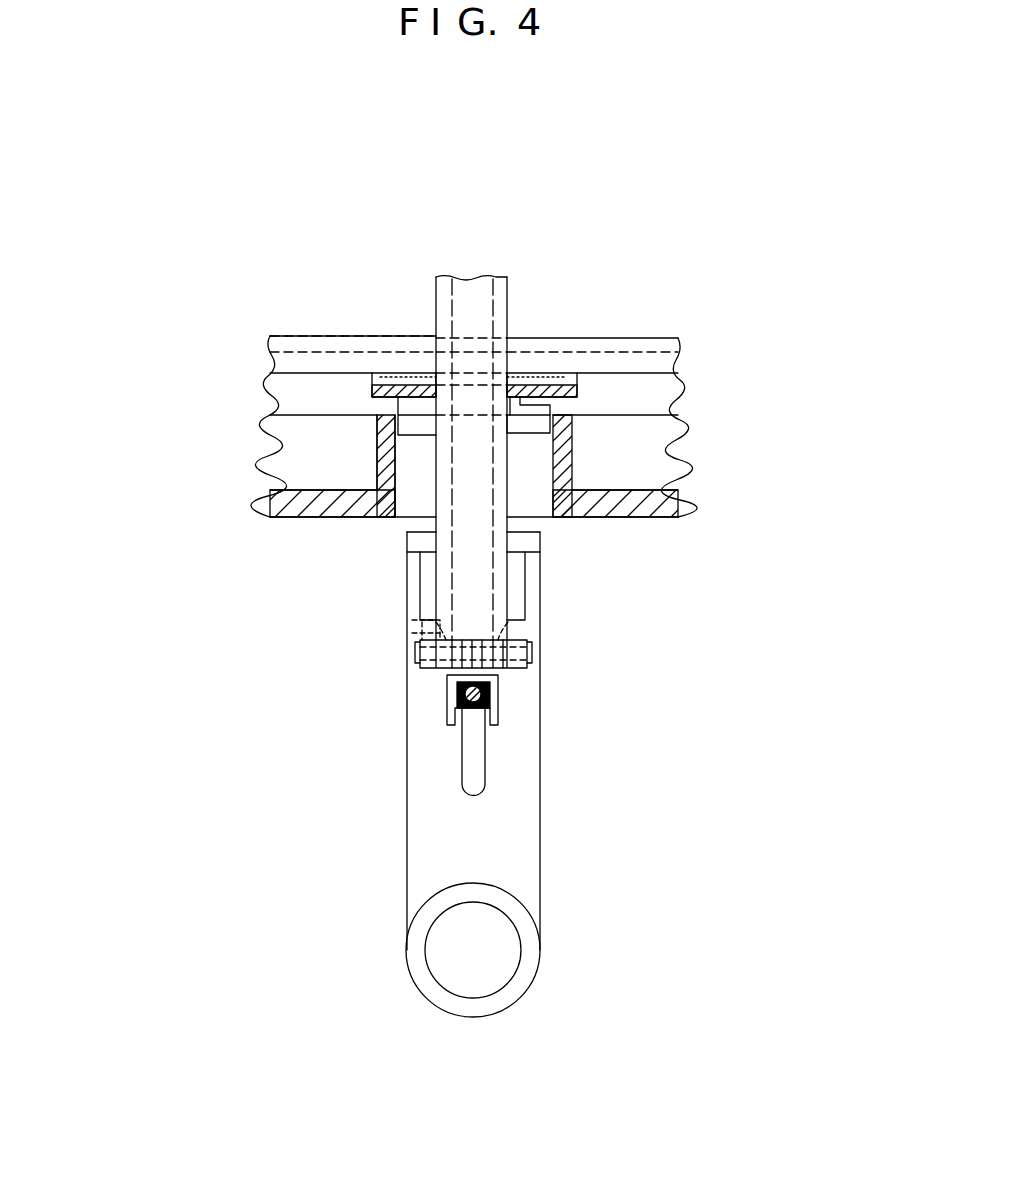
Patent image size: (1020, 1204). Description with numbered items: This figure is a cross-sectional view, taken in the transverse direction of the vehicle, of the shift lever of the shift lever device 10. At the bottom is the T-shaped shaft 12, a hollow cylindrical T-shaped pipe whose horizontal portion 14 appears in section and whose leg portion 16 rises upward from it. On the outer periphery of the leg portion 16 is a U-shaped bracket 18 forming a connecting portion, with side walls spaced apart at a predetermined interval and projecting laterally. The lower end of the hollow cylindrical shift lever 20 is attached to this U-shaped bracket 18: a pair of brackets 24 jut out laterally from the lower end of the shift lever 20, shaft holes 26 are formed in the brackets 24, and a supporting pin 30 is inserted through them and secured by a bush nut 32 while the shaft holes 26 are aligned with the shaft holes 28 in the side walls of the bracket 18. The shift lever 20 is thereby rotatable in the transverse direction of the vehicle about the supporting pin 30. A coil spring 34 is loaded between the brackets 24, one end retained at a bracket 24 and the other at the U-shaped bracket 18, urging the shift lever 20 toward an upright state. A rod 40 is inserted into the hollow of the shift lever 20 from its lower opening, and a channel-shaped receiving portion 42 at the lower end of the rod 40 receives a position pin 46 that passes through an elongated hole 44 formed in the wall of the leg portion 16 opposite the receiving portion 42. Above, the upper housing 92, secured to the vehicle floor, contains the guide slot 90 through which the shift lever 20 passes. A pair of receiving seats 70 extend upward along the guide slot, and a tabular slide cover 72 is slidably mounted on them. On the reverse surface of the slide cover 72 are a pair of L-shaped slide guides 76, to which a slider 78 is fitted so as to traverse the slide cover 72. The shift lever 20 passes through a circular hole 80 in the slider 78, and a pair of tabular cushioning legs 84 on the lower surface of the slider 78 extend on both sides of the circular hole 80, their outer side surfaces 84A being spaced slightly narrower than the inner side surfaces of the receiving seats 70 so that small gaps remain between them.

The shift lever device 10 is at (619, 219).
The T-shaped shaft 12 is at (403, 936).
The horizontal portion 14 is at (510, 911).
The leg portion 16 is at (515, 808).
The U-shaped bracket 18 is at (515, 575).
The shift lever 20 is at (509, 283).
The brackets 24 is at (443, 570).
The shaft holes 26 is at (437, 620).
The shaft holes 28 is at (440, 633).
The supporting pin 30 is at (418, 655).
The bush nut 32 is at (532, 662).
The coil spring 34 is at (481, 640).
The rod 40 is at (478, 278).
The receiving portion 42 is at (497, 712).
The elongated hole 44 is at (468, 734).
The position pin 46 is at (458, 700).
The receiving seats 70 is at (290, 440).
The slide cover 72 is at (288, 387).
The slide guides 76 is at (371, 381).
The slider 78 is at (577, 392).
The circular hole 80 is at (460, 383).
The cushioning legs 84 is at (572, 448).
The outer side surfaces 84A is at (536, 430).
The guide slot 90 is at (320, 362).
The upper housing 92 is at (636, 345).